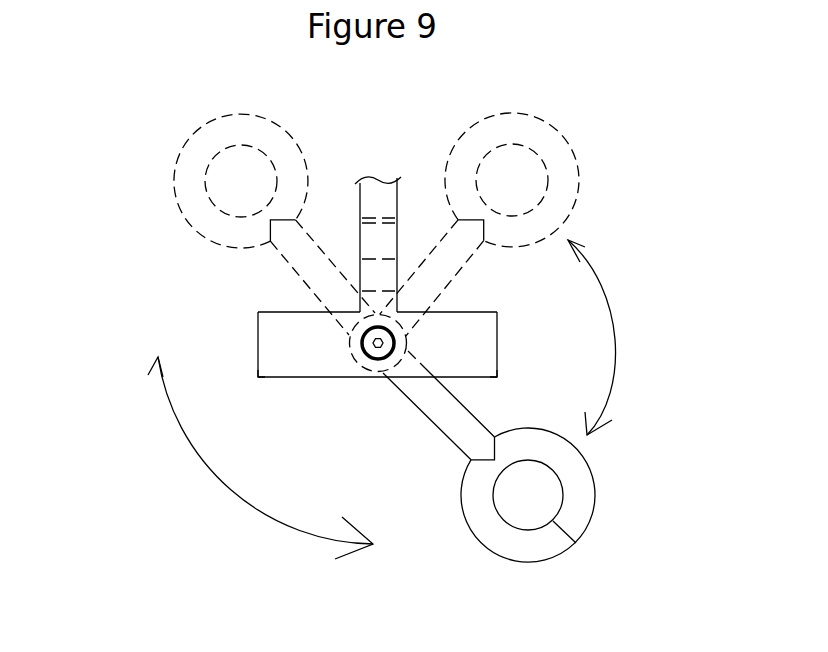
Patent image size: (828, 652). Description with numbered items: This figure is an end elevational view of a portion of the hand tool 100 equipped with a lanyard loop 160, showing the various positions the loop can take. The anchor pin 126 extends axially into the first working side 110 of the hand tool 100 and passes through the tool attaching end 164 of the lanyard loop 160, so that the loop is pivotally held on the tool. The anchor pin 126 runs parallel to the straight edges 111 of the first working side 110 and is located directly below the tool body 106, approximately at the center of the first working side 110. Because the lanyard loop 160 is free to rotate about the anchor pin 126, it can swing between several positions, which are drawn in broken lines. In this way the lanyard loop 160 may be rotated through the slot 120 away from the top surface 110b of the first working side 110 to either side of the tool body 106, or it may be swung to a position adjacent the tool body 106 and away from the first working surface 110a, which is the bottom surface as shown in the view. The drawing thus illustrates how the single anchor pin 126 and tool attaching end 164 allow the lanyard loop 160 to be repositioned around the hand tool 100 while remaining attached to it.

The hand tool 100 is at (258, 340).
The tool body 106 is at (373, 202).
The first working side 110 is at (376, 343).
The first working surface 110a is at (283, 377).
The top surface 110b is at (278, 312).
The straight edges 111 is at (260, 377).
The slot 120 is at (377, 290).
The anchor pin 126 is at (378, 355).
The lanyard loop 160 is at (295, 165).
The tool attaching end 164 is at (358, 362).